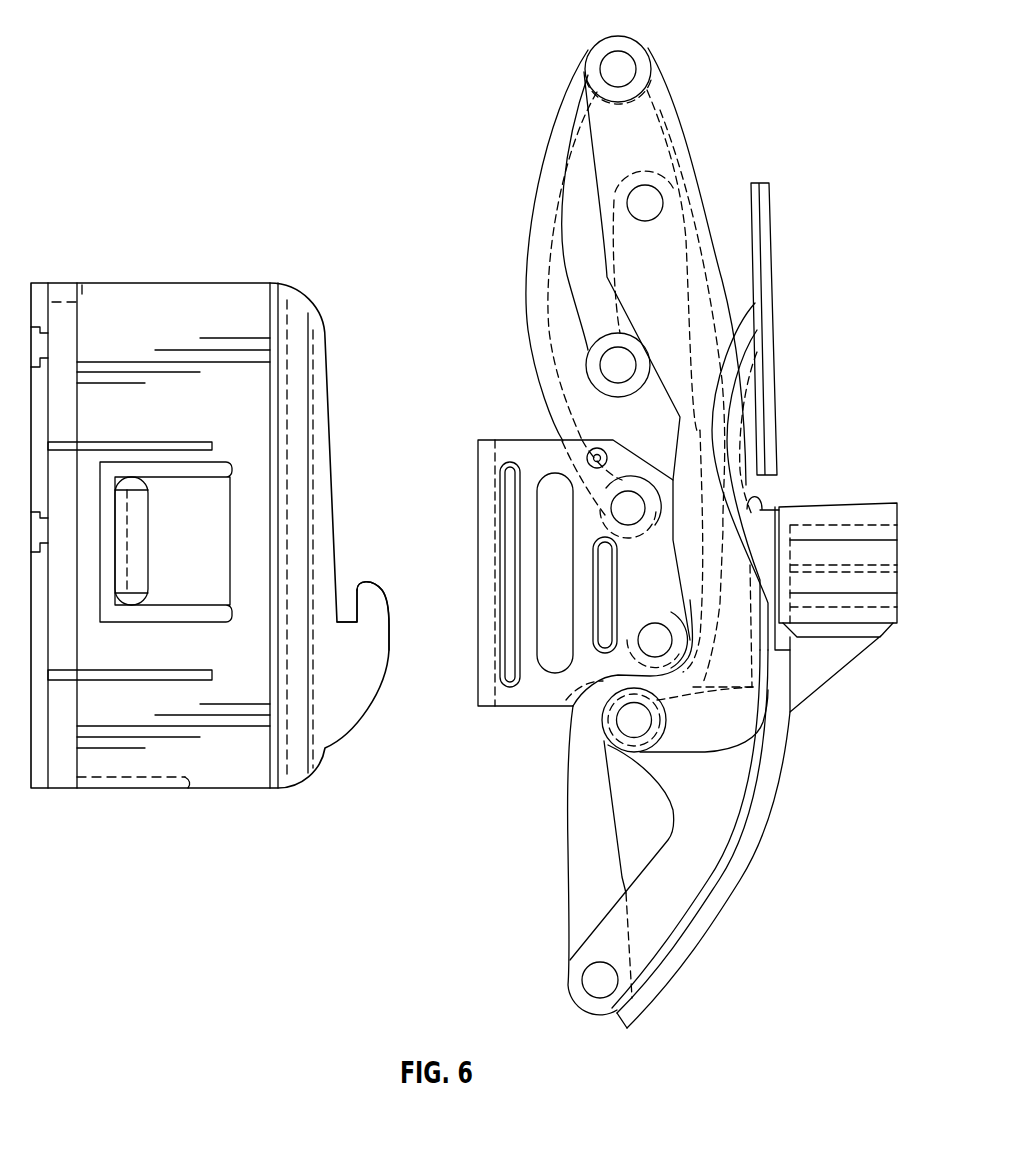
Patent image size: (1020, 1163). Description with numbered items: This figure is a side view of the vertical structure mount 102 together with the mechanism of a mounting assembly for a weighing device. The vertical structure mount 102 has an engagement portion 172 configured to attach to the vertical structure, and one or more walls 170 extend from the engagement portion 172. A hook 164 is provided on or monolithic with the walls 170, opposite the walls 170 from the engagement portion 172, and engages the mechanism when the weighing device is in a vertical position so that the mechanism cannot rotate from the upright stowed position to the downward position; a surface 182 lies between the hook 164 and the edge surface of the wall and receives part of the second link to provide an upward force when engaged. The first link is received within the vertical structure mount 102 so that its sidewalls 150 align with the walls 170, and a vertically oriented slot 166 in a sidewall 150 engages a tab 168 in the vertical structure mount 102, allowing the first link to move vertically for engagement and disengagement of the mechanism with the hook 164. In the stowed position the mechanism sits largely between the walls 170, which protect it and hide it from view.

The vertical structure mount 102 is at (199, 249).
The sidewall 150 is at (502, 460).
The hook 164 is at (387, 610).
The vertically oriented slot 166 is at (552, 478).
The tab 168 is at (148, 548).
The wall 170 is at (148, 298).
The engagement portion 172 is at (35, 292).
The surface 182 is at (343, 613).